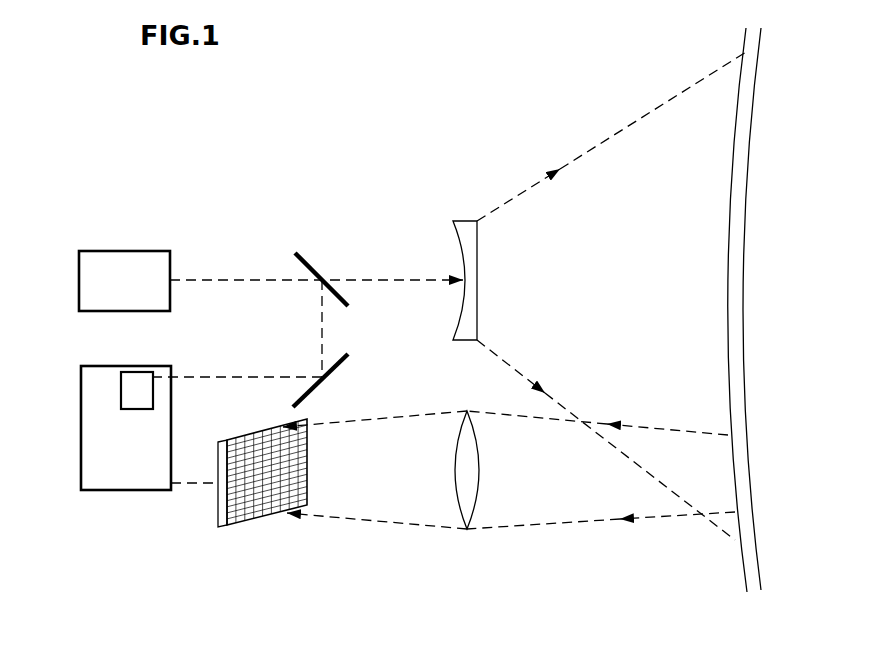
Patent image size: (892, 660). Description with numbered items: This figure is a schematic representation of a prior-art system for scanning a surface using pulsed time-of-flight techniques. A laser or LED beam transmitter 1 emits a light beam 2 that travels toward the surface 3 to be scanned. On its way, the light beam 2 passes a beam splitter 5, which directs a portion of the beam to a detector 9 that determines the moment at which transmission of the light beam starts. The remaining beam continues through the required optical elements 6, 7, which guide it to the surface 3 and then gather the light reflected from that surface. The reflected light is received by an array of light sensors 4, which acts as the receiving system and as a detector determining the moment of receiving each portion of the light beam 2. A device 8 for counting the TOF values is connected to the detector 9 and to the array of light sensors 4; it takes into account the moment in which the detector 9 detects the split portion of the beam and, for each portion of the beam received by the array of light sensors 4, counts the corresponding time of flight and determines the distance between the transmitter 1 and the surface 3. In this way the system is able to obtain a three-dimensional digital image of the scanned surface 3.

The laser or LED beam transmitter 1 is at (125, 251).
The light beam 2 is at (237, 260).
The surface 3 is at (772, 72).
The array of light sensors 4 is at (253, 530).
The beam splitter 5 is at (313, 243).
The optical element 6 is at (466, 215).
The optical element 7 is at (467, 535).
The device for counting the TOF values 8 is at (80, 428).
The detector 9 is at (137, 372).